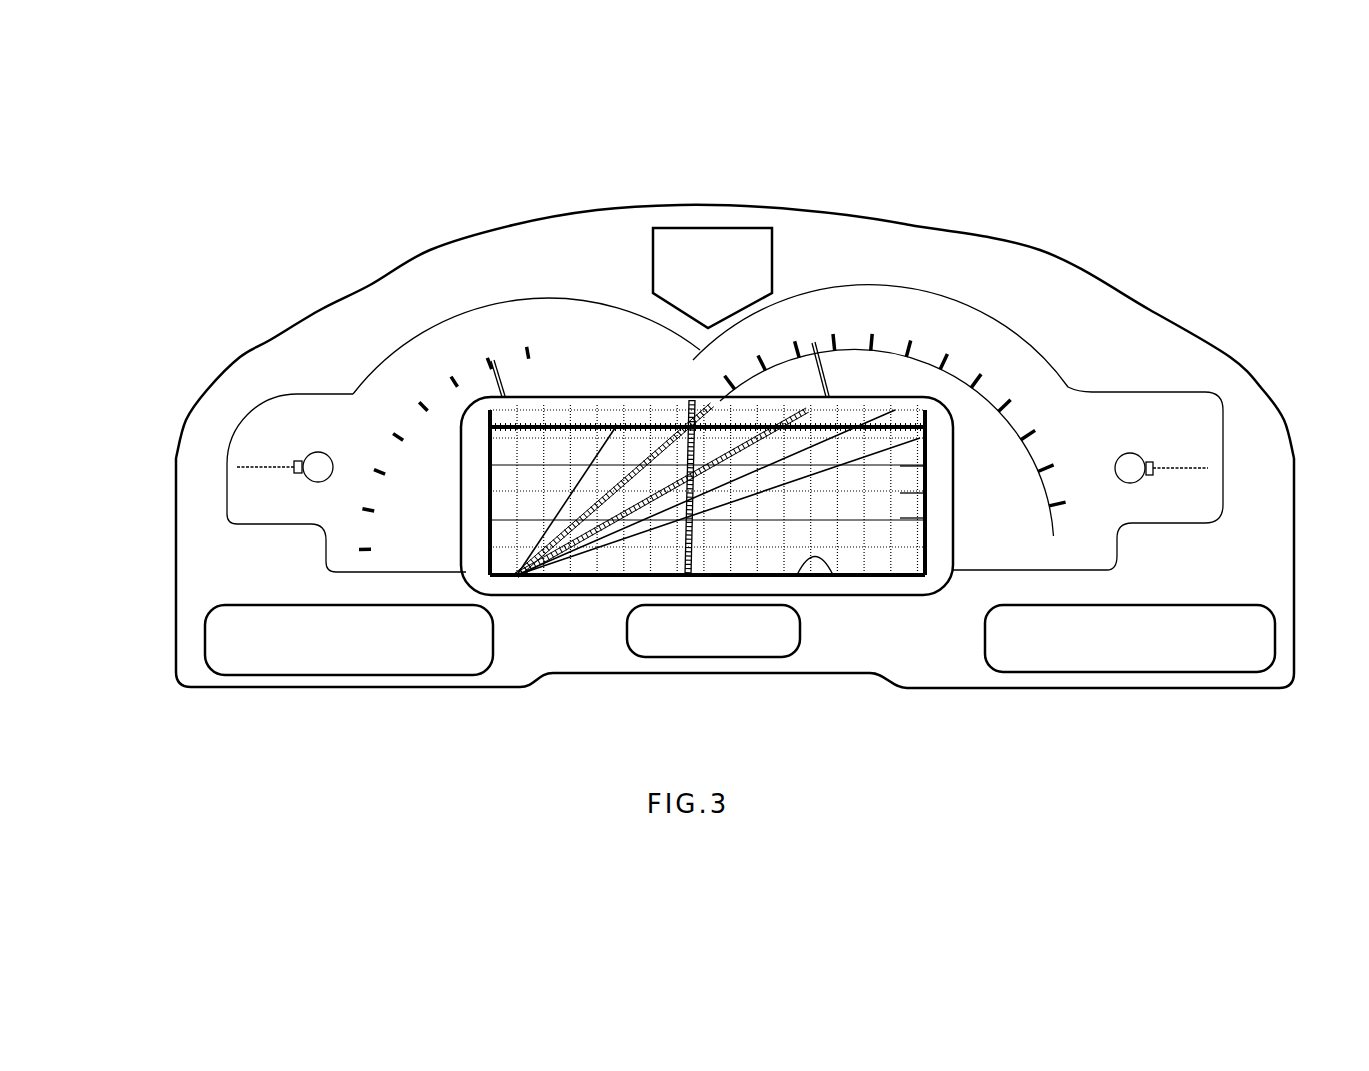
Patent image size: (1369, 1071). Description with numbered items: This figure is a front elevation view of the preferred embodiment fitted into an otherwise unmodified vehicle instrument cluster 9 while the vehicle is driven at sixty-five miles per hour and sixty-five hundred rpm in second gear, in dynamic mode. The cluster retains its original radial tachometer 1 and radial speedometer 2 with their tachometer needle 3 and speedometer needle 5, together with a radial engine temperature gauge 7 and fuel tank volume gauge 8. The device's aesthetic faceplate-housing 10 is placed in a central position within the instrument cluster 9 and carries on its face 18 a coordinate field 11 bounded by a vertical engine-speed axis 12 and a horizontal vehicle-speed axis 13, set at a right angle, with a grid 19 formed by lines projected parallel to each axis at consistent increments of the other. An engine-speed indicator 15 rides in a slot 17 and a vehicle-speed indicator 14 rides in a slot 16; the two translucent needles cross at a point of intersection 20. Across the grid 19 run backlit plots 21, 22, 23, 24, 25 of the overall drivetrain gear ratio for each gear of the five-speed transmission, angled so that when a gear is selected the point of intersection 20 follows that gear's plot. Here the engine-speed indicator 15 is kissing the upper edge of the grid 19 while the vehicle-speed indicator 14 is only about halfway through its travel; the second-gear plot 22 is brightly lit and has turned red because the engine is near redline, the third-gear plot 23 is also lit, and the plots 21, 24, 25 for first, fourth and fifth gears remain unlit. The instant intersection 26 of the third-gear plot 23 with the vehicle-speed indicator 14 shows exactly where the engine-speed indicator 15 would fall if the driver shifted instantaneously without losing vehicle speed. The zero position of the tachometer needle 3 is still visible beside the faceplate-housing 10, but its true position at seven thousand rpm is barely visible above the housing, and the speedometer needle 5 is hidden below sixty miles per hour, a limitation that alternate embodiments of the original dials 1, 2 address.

The radial tachometer 1 is at (552, 313).
The radial speedometer 2 is at (860, 383).
The tachometer needle 3 is at (522, 397).
The speedometer needle 5 is at (830, 370).
The engine temperature gauge 7 is at (257, 451).
The fuel tank volume gauge 8 is at (1170, 447).
The instrument cluster 9 is at (263, 385).
The aesthetic faceplate-housing 10 is at (942, 549).
The coordinate field 11 is at (903, 557).
The engine-speed axis 12 is at (480, 568).
The vehicle-speed axis 13 is at (717, 577).
The vehicle-speed indicator 14 is at (700, 534).
The engine-speed indicator 15 is at (490, 492).
The slot 16 is at (832, 573).
The slot 17 is at (490, 552).
The face 18 is at (942, 521).
The grid 19 is at (913, 518).
The point of intersection 20 is at (692, 428).
The backlit plot 21 is at (540, 542).
The backlit plot 22 is at (560, 535).
The backlit plot 23 is at (593, 528).
The backlit plot 24 is at (617, 525).
The backlit plot 25 is at (647, 525).
The instant intersection 26 is at (683, 477).